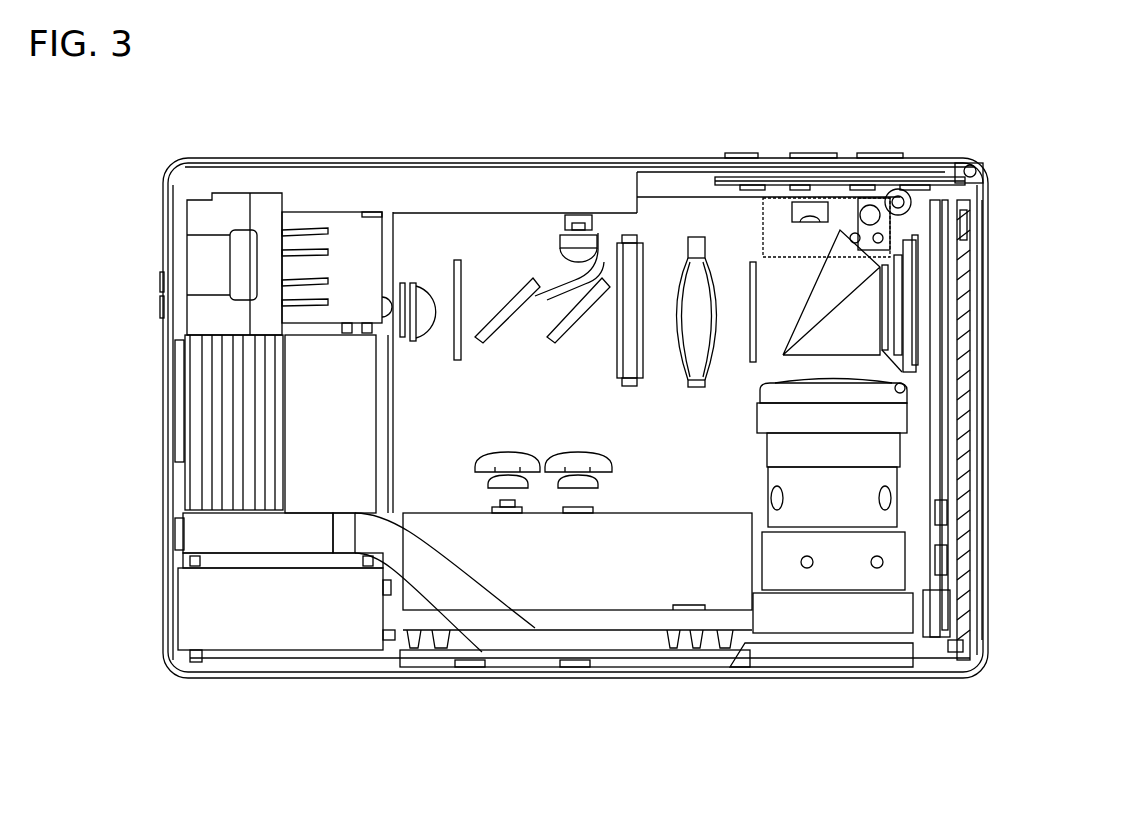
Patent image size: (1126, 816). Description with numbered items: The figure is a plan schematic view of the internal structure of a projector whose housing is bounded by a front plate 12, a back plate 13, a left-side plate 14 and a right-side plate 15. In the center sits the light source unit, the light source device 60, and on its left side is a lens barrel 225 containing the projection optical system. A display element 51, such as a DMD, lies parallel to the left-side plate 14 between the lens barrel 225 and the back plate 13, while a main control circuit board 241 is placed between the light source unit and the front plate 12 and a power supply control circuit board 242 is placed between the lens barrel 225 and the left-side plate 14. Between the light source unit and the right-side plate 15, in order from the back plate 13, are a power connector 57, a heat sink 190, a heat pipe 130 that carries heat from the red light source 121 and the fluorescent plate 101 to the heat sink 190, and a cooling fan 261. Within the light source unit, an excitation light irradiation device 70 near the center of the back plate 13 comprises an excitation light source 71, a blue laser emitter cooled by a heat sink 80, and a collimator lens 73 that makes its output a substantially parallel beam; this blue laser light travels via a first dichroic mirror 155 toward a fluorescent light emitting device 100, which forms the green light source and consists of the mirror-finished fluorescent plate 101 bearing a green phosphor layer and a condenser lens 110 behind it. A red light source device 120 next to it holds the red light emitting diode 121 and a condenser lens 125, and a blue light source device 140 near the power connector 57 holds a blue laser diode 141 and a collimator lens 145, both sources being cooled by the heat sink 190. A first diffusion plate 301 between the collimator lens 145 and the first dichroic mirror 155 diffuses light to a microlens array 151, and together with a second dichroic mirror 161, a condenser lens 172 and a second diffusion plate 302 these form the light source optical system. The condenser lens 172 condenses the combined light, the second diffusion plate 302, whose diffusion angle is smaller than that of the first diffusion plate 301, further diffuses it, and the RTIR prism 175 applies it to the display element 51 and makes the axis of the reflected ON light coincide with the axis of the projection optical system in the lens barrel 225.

The front plate 12 is at (283, 677).
The back plate 13 is at (247, 158).
The left-side plate 14 is at (988, 342).
The right-side plate 15 is at (180, 388).
The display element 51 is at (972, 166).
The power connector 57 is at (212, 212).
The light source device 60 is at (500, 258).
The excitation light irradiation device 70 is at (548, 144).
The excitation light source 71 is at (570, 214).
The collimator lens 73 is at (560, 234).
The heat sink 80 is at (596, 200).
The fluorescent light emitting device 100 is at (607, 625).
The fluorescent plate 101 is at (588, 513).
The condenser lens 110 is at (557, 493).
The red light source device 120 is at (443, 625).
The red light source 121 is at (492, 513).
The condenser lens 125 is at (472, 478).
The heat pipe 130 is at (205, 533).
The blue light source device 140 is at (406, 184).
The blue light source 141 is at (401, 283).
The collimator lens 145 is at (422, 278).
The microlens array 151 is at (692, 237).
The first dichroic mirror 155 is at (594, 283).
The second dichroic mirror 161 is at (636, 240).
The condenser lens 172 is at (702, 237).
The RTIR prism 175 is at (842, 267).
The heat sink 190 is at (315, 393).
The lens barrel 225 is at (857, 613).
The main control circuit board 241 is at (740, 620).
The power supply control circuit board 242 is at (960, 553).
The cooling fan 261 is at (227, 610).
The first diffusion plate 301 is at (456, 360).
The second diffusion plate 302 is at (750, 362).